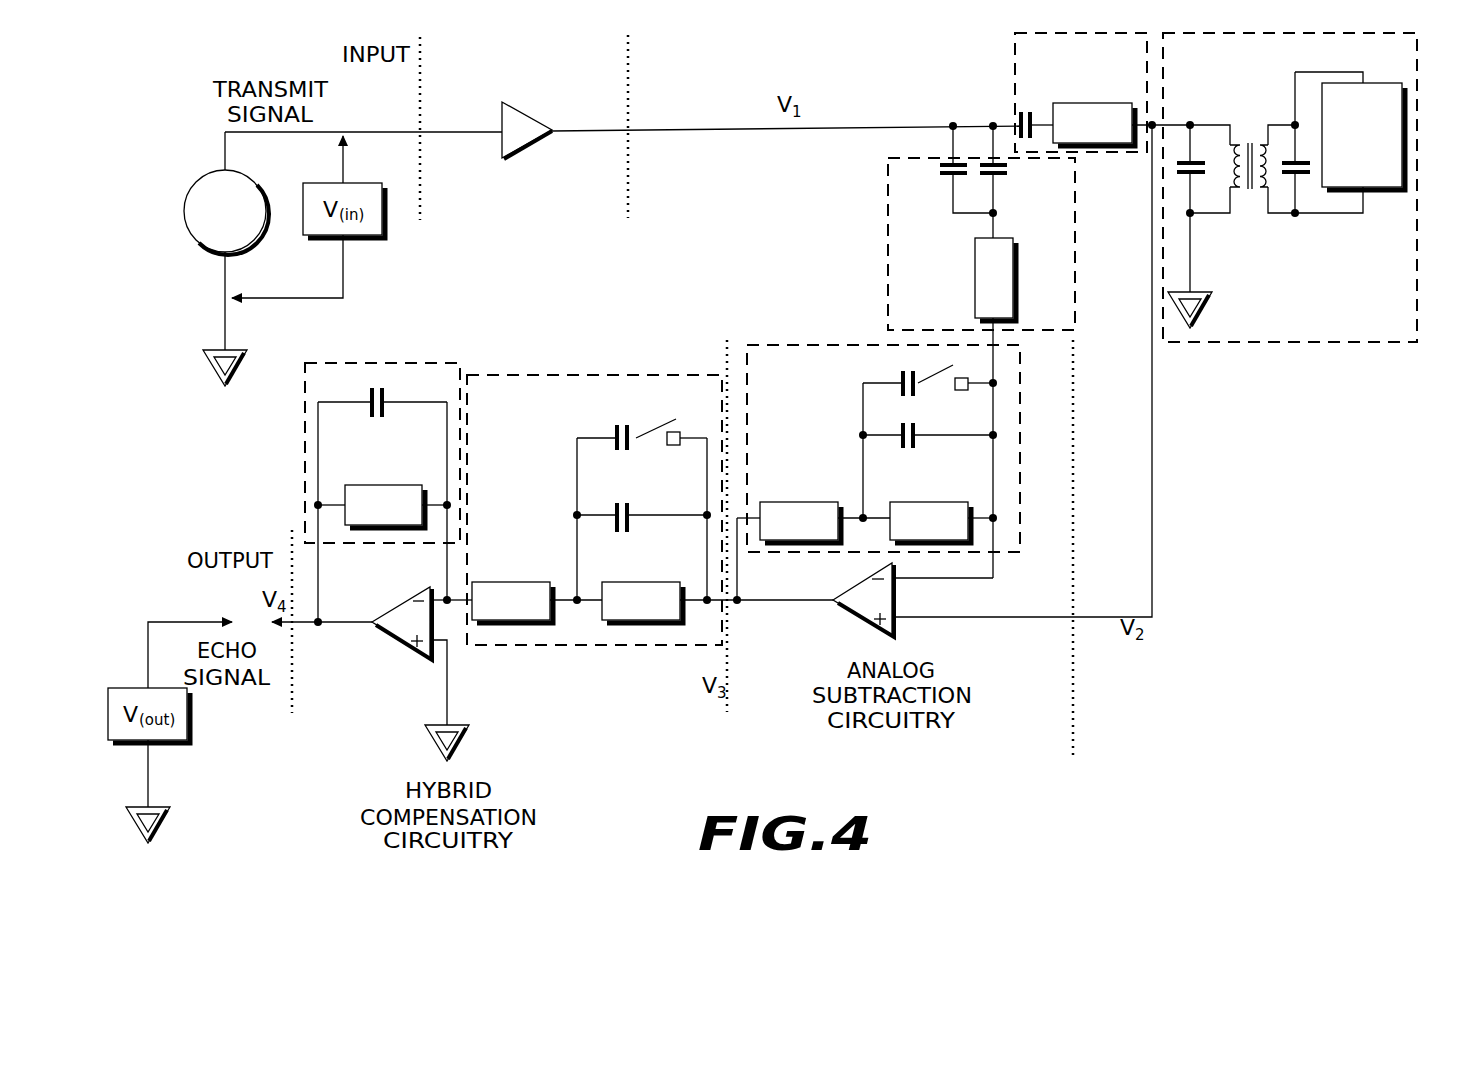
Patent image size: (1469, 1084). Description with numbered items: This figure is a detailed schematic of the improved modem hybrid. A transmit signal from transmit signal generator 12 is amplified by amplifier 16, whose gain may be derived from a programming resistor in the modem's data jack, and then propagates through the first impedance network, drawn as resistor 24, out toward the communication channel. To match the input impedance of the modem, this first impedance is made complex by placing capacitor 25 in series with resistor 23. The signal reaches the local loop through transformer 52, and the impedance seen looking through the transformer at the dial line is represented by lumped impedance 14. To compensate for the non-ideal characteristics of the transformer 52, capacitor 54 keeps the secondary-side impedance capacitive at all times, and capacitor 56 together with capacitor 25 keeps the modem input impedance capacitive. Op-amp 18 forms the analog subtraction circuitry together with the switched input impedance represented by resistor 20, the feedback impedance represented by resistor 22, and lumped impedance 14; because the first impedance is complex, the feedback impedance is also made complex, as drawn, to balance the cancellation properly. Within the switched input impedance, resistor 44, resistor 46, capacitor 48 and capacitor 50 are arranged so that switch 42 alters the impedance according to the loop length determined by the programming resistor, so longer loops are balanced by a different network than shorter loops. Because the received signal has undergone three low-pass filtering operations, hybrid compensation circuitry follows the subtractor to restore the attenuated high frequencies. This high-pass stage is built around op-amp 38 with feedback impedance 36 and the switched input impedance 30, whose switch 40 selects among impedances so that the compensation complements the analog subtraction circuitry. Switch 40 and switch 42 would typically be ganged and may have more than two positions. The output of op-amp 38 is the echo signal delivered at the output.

The transmit signal generator 12 is at (184, 211).
The lumped impedance 14 is at (1290, 220).
The amplifier 16 is at (507, 102).
The op-amp 18 is at (850, 615).
The resistor 20 is at (861, 432).
The resistor 22 is at (883, 215).
The resistor 23 is at (1067, 103).
The resistor 24 is at (1008, 32).
The capacitor 25 is at (1015, 118).
The hybrid compensation circuitry impedance 30 is at (592, 465).
The impedance 36 is at (298, 427).
The op-amp 38 is at (392, 635).
The switch 40 is at (670, 423).
The switch 42 is at (950, 375).
The resistor 44 is at (770, 502).
The resistor 46 is at (900, 502).
The capacitor 48 is at (916, 433).
The capacitor 50 is at (903, 392).
The transformer 52 is at (1248, 145).
The capacitor 54 is at (1180, 162).
The capacitor 56 is at (1290, 175).